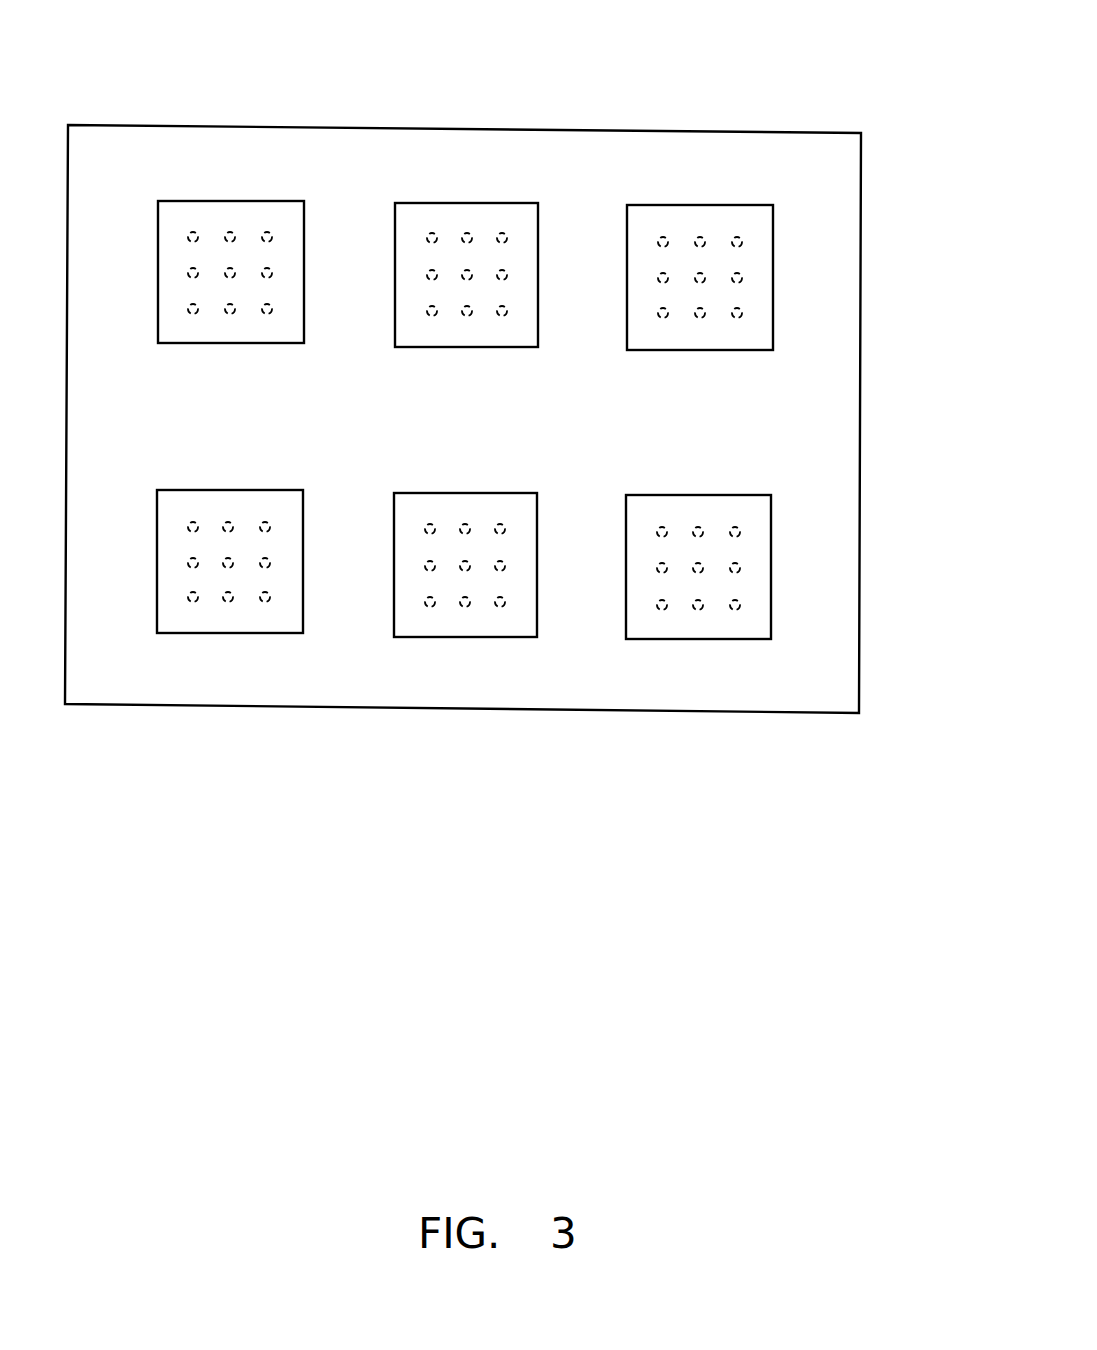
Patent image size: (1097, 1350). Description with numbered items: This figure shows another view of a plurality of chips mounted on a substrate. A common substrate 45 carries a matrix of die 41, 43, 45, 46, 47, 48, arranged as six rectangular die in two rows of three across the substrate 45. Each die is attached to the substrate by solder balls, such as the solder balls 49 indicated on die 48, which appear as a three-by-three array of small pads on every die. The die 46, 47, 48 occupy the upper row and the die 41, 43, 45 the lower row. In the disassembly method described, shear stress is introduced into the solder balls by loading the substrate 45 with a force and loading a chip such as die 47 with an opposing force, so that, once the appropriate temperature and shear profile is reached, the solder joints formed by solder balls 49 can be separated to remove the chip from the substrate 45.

The die 41 is at (263, 618).
The die 43 is at (497, 620).
The substrate 45 is at (687, 167).
The die 46 is at (265, 217).
The die 47 is at (500, 220).
The die 48 is at (735, 223).
The solder balls 49 is at (745, 313).